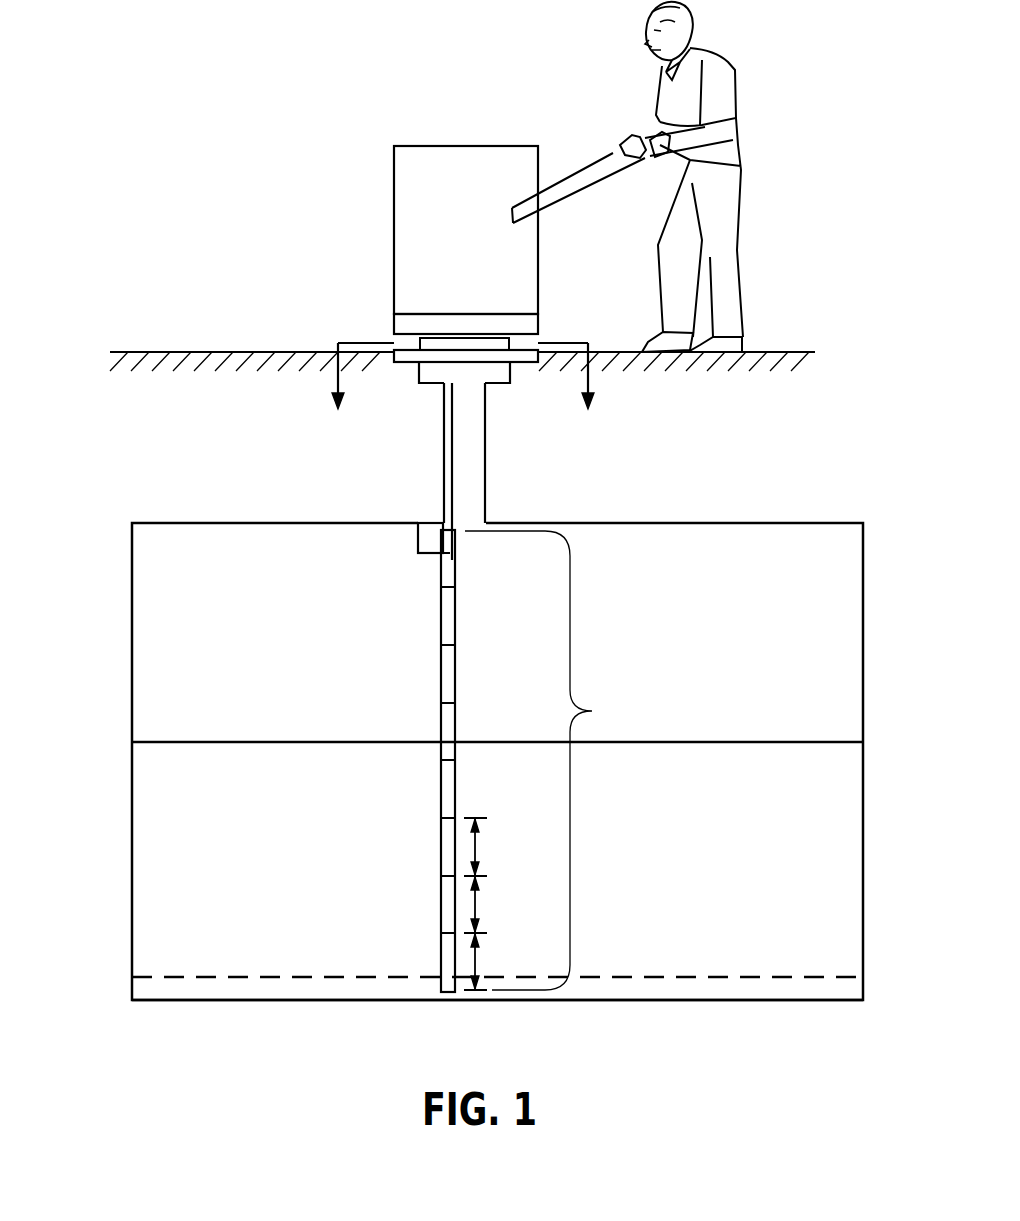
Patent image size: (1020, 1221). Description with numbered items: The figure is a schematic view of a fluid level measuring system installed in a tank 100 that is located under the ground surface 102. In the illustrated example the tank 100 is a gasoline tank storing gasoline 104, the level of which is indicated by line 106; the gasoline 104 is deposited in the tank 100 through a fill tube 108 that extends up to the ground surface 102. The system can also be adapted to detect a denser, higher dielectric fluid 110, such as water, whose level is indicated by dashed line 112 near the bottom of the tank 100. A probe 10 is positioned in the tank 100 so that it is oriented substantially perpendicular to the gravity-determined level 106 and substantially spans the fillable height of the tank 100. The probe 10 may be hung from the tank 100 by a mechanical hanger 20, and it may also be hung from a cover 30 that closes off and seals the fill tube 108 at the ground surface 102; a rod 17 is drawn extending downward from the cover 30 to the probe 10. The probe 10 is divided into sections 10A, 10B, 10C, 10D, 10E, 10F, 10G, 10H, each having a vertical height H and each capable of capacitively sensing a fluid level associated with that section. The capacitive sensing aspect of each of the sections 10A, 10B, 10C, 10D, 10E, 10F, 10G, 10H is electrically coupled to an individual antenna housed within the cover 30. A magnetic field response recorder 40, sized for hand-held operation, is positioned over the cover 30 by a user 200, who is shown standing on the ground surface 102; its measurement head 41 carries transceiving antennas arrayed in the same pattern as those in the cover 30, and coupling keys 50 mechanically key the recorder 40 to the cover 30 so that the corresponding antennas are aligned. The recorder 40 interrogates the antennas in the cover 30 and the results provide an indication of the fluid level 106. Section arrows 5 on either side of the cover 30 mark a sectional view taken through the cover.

The section line for FIG. 5 is at (463, 389).
The probe 10 is at (592, 711).
The probe section 10A is at (445, 568).
The probe section 10B is at (445, 617).
The probe section 10C is at (445, 665).
The probe section 10D is at (445, 713).
The probe section 10E is at (445, 790).
The probe section 10F is at (445, 845).
The probe section 10G is at (445, 903).
The probe section 10H is at (445, 950).
The rod 17 is at (452, 413).
The mechanical hanger 20 is at (428, 540).
The cover 30 is at (438, 357).
The magnetic field response recorder 40 is at (398, 146).
The measurement head 41 is at (408, 320).
The coupling keys 50 is at (420, 340).
The tank 100 is at (132, 585).
The ground surface 102 is at (243, 352).
The gasoline 104 is at (168, 860).
The fluid level 106 is at (170, 742).
The fill tube 108 is at (485, 462).
The denser higher dielectric fluid 110 is at (165, 995).
The dashed line 112 is at (165, 977).
The user 200 is at (732, 82).
The vertical height H is at (514, 960).